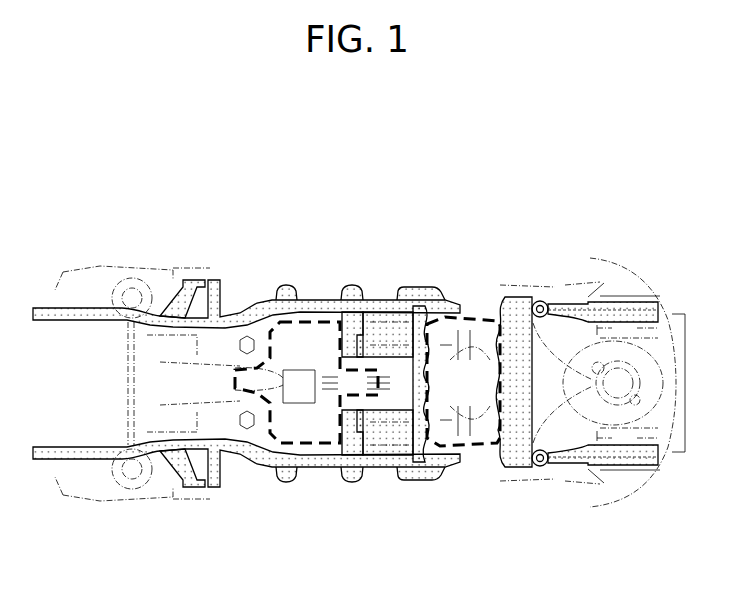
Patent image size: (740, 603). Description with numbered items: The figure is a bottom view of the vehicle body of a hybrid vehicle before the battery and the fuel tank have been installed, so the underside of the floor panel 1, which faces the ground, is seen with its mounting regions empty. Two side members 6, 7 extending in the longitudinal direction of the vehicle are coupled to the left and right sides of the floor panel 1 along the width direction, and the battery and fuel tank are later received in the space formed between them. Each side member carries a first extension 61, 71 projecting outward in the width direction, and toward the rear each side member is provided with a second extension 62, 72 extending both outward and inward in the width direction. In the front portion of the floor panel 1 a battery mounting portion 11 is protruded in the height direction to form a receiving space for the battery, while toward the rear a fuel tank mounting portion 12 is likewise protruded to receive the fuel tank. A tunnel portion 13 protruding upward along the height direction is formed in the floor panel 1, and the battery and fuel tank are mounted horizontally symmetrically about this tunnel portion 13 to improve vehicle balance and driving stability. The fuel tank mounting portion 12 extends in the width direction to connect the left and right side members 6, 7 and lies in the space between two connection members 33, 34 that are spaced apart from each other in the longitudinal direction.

The floor panel 1 is at (390, 430).
The side member 6 is at (250, 455).
The first extension 61 is at (287, 481).
The second extension 62 is at (361, 482).
The side member 7 is at (248, 306).
The first extension 71 is at (287, 292).
The second extension 72 is at (348, 292).
The battery mounting portion 11 is at (312, 432).
The fuel tank mounting portion 12 is at (481, 442).
The tunnel portion 13 is at (320, 395).
The connection member 33 is at (440, 425).
The connection member 34 is at (527, 407).